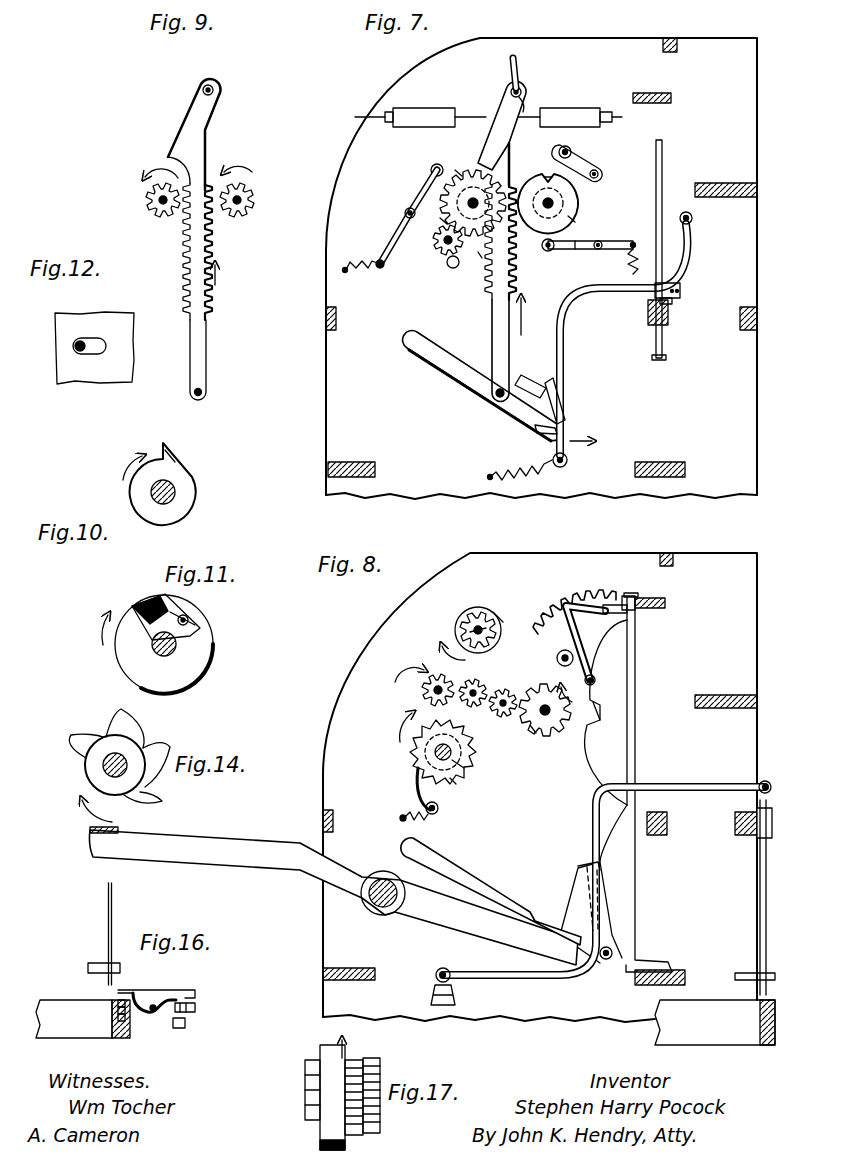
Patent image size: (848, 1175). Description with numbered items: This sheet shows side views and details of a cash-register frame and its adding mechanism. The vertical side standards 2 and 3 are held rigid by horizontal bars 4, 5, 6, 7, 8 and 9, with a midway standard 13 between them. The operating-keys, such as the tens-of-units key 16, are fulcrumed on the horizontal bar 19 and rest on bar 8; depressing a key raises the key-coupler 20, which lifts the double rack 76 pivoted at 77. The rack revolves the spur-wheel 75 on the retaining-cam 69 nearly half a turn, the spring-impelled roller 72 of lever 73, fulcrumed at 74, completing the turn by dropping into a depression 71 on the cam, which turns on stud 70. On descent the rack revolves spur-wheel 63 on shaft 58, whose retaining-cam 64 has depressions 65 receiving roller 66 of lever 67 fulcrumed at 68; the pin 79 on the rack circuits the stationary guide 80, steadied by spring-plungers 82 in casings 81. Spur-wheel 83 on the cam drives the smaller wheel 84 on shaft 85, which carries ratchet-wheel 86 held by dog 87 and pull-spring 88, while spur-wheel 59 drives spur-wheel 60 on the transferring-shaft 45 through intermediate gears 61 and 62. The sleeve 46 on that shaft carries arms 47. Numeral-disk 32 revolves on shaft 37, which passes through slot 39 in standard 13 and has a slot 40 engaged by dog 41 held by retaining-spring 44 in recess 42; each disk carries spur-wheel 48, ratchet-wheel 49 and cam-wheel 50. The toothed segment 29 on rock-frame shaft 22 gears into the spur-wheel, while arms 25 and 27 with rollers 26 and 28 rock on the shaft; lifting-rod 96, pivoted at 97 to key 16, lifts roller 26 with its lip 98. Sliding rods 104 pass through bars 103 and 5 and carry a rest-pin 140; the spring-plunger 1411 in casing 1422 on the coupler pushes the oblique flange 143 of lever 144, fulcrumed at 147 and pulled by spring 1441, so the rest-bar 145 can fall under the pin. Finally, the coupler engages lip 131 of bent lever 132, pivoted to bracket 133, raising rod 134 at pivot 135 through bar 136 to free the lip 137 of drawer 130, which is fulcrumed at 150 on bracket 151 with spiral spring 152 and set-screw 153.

In FIG. 7, the vertical side standard 2 is at (670, 45).
In FIG. 8, the vertical side standard 2 is at (666, 559).
In FIG. 7, the vertical side standard 3 is at (353, 132).
In FIG. 8, the vertical side standard 3 is at (331, 716).
In FIG. 7, the horizontal bar 4 is at (326, 318).
In FIG. 8, the horizontal bar 4 is at (323, 820).
In FIG. 7, the horizontal bar 5 is at (648, 316).
In FIG. 8, the horizontal bar 5 is at (667, 822).
In FIG. 8, the horizontal bar 6 is at (735, 822).
In FIG. 7, the horizontal bar 7 is at (328, 470).
In FIG. 8, the horizontal bar 7 is at (323, 974).
In FIG. 7, the horizontal bar 8 is at (685, 470).
In FIG. 8, the horizontal bar 8 is at (757, 783).
In FIG. 7, the horizontal bar 9 is at (728, 183).
In FIG. 8, the horizontal bar 9 is at (728, 695).
In FIG. 12, the midway vertical standard 13 is at (90, 314).
In FIG. 8, the tens-of-units operating-key 16 is at (186, 838).
In FIG. 8, the horizontal bar 19 is at (380, 908).
In FIG. 7, the key-coupler 20 is at (450, 372).
In FIG. 8, the key-coupler 20 is at (478, 882).
In FIG. 7, the rock-frame shaft 22 is at (558, 152).
In FIG. 8, the rock-frame shaft 22 is at (570, 652).
In FIG. 8, the tens-of-units rock-frame arm 25 is at (590, 662).
In FIG. 8, the roller 26 is at (595, 678).
In FIG. 7, the hundreds-of-units rock-frame arm 27 is at (586, 165).
In FIG. 7, the roller 28 is at (598, 176).
In FIG. 8, the toothed segment 29 is at (552, 592).
In FIG. 11, the numeral-disk 32 is at (116, 658).
In FIG. 17, the numeral-disk 32 is at (320, 1049).
In FIG. 8, the numeral-disk 32 is at (478, 608).
In FIG. 12, the shaft 37 is at (73, 346).
In FIG. 10, the shaft 37 is at (176, 492).
In FIG. 11, the shaft 37 is at (176, 645).
In FIG. 8, the shaft 37 is at (462, 628).
In FIG. 12, the slot 39 is at (106, 346).
In FIG. 10, the horizontal slot 40 is at (180, 480).
In FIG. 11, the horizontal slot 40 is at (196, 622).
In FIG. 11, the dog 41 is at (190, 606).
In FIG. 11, the recess 42 is at (133, 608).
In FIG. 11, the retaining-spring 44 is at (159, 598).
In FIG. 14, the transferring-shaft 45 is at (103, 765).
In FIG. 8, the transferring-shaft 45 is at (431, 687).
In FIG. 14, the sleeve 46 is at (96, 780).
In FIG. 14, the arm 47 is at (86, 734).
In FIG. 17, the spur-wheel 48 is at (358, 1058).
In FIG. 8, the spur-wheel 48 is at (494, 616).
In FIG. 17, the ratchet-wheel 49 is at (380, 1064).
In FIG. 10, the cam-wheel 50 is at (172, 463).
In FIG. 17, the cam-wheel 50 is at (305, 1080).
In FIG. 9, the shaft 58 is at (255, 198).
In FIG. 7, the shaft 58 is at (554, 203).
In FIG. 8, the shaft 58 is at (548, 718).
In FIG. 8, the spur-wheel 59 is at (534, 736).
In FIG. 8, the spur-wheel 60 is at (423, 690).
In FIG. 8, the intermediate gear-wheel 61 is at (508, 690).
In FIG. 8, the intermediate gear-wheel 62 is at (474, 682).
In FIG. 9, the spur-wheel 63 is at (246, 218).
In FIG. 7, the spur-wheel 63 is at (563, 210).
In FIG. 7, the retaining-cam 64 is at (575, 223).
In FIG. 7, the depression 65 is at (539, 211).
In FIG. 7, the retaining-roller 66 is at (553, 251).
In FIG. 7, the lever 67 is at (577, 250).
In FIG. 7, the fulcrum 68 is at (600, 251).
In FIG. 7, the retaining-cam 69 is at (479, 258).
In FIG. 9, the stud 70 is at (162, 210).
In FIG. 7, the stud 70 is at (473, 197).
In FIG. 7, the depression 71 is at (455, 168).
In FIG. 7, the spring-impelled roller 72 is at (431, 170).
In FIG. 7, the lever 73 is at (421, 181).
In FIG. 7, the fulcrum 74 is at (404, 212).
In FIG. 9, the spur-wheel 75 is at (146, 203).
In FIG. 7, the spur-wheel 75 is at (492, 163).
In FIG. 9, the double rack 76 is at (196, 113).
In FIG. 7, the double rack 76 is at (503, 102).
In FIG. 9, the pivot 77 is at (196, 396).
In FIG. 7, the pivot 77 is at (498, 397).
In FIG. 9, the side pin or roller 79 is at (211, 85).
In FIG. 7, the side pin or roller 79 is at (521, 90).
In FIG. 7, the stationary guide 80 is at (519, 60).
In FIG. 7, the casing 81 is at (423, 115).
In FIG. 7, the spring-plunger 82 is at (375, 117).
In FIG. 7, the spur-wheel 83 is at (439, 221).
In FIG. 7, the spur-wheel 84 is at (440, 248).
In FIG. 8, the spur-wheel 84 is at (425, 753).
In FIG. 7, the shaft 85 is at (449, 267).
In FIG. 8, the shaft 85 is at (466, 768).
In FIG. 8, the ratchet-wheel 86 is at (457, 783).
In FIG. 8, the dog 87 is at (420, 792).
In FIG. 8, the pull-spring 88 is at (405, 820).
In FIG. 8, the tens-of-units lifting-rod 96 is at (647, 652).
In FIG. 8, the pivot 97 is at (604, 960).
In FIG. 8, the lip 98 is at (590, 726).
In FIG. 7, the horizontal stationary bar 103 is at (652, 93).
In FIG. 8, the horizontal stationary bar 103 is at (666, 603).
In FIG. 7, the sliding rod 104 is at (663, 160).
In FIG. 16, the drawer 130 is at (83, 1019).
In FIG. 8, the drawer 130 is at (715, 1022).
In FIG. 8, the lip 131 is at (578, 866).
In FIG. 8, the bent lever 132 is at (688, 787).
In FIG. 8, the bracket 133 is at (445, 1008).
In FIG. 16, the vertical slidable rod 134 is at (113, 896).
In FIG. 8, the vertical slidable rod 134 is at (767, 885).
In FIG. 8, the pivot 135 is at (767, 781).
In FIG. 16, the bar 136 is at (96, 962).
In FIG. 16, the lip 137 is at (134, 989).
In FIG. 7, the rest-pin 140 is at (672, 305).
In FIG. 7, the oblique flange 143 is at (561, 398).
In FIG. 7, the lever 144 is at (563, 352).
In FIG. 7, the rest-bar 145 is at (681, 291).
In FIG. 7, the fulcrum 147 is at (693, 220).
In FIG. 16, the fulcrum 150 is at (152, 1020).
In FIG. 16, the bracket 151 is at (196, 1006).
In FIG. 16, the spiral spring 152 is at (116, 1000).
In FIG. 16, the set-screw 153 is at (186, 1023).
In FIG. 7, the spring-plunger 1411 is at (558, 430).
In FIG. 7, the casing 1422 is at (534, 386).
In FIG. 7, the tension pull-spring 1441 is at (532, 470).